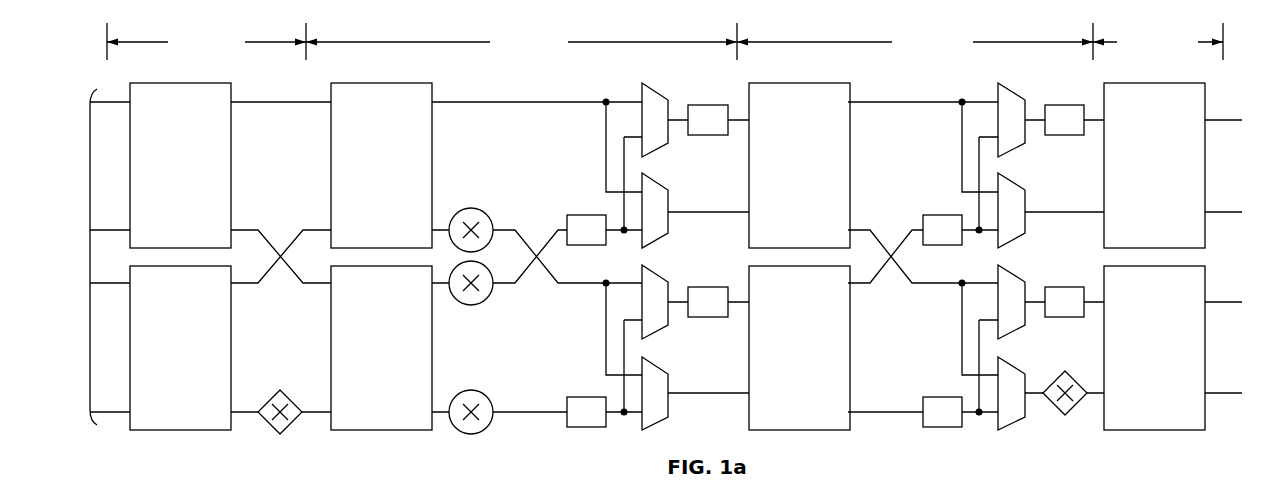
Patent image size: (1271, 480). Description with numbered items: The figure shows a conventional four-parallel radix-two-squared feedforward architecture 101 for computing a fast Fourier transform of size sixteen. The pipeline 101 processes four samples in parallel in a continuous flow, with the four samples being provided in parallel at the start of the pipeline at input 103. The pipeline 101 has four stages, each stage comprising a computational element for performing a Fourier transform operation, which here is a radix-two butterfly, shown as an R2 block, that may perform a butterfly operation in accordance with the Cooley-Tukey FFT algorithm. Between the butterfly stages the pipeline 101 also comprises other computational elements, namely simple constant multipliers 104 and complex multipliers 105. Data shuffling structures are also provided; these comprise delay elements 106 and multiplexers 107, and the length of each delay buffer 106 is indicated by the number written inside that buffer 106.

The 4-parallel radix-2² feedforward architecture 101 is at (124, 14).
The input 103 is at (89, 253).
The simple constant multiplier 104 is at (280, 390).
The complex multiplier 105 is at (471, 390).
The delay element 106 is at (570, 397).
The multiplexer 107 is at (653, 363).